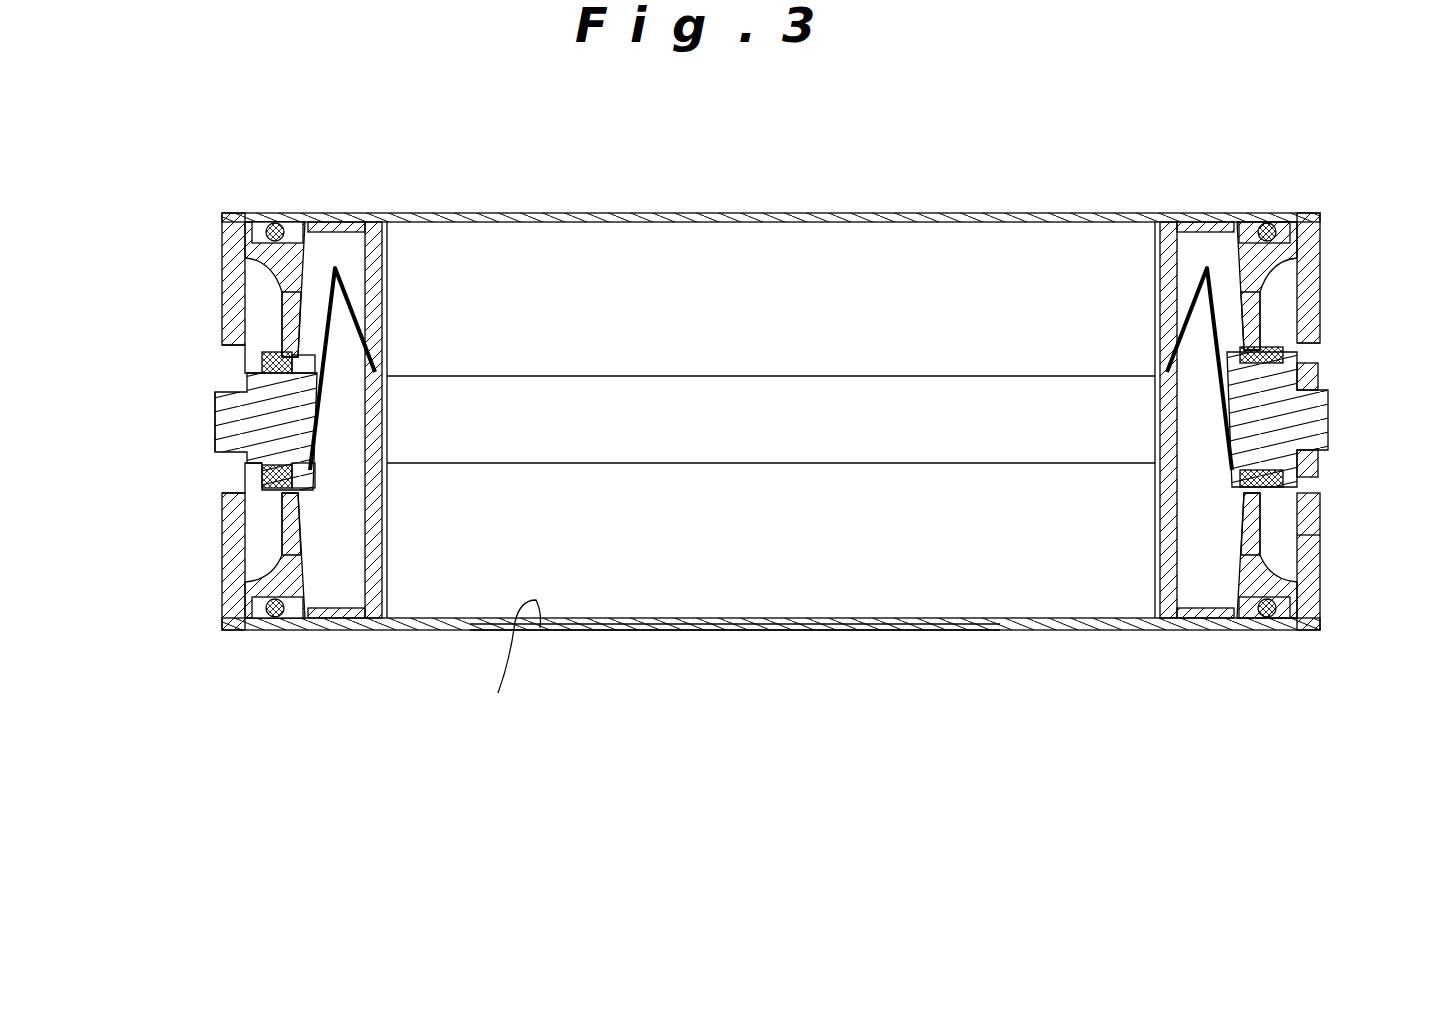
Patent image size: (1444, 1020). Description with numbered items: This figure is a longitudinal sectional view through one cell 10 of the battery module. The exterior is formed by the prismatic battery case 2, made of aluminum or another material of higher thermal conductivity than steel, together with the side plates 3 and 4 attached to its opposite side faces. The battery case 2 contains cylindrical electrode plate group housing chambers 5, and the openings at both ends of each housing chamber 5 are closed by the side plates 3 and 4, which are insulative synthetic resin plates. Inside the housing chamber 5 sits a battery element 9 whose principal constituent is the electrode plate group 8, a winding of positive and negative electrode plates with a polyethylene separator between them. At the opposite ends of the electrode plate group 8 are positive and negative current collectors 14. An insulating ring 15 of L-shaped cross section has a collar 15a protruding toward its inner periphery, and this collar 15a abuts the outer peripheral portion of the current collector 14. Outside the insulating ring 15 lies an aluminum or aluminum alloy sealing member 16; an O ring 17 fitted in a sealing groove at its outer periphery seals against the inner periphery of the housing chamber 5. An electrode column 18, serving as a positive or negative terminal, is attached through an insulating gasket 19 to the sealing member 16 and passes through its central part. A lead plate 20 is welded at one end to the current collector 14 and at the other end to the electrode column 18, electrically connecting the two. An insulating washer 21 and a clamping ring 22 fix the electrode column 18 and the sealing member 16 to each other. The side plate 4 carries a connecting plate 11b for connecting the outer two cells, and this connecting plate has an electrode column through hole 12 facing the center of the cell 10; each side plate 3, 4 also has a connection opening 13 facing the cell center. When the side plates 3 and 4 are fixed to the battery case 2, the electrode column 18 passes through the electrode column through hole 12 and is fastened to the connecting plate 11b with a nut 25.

The battery case 2 is at (590, 623).
The side plate 3 is at (235, 260).
The side plate 4 is at (1314, 575).
The electrode plate group housing chamber 5 is at (514, 673).
The electrode plate group 8 is at (728, 548).
The battery element 9 is at (727, 626).
The cell 10 is at (897, 632).
The connecting plate 11b is at (1313, 510).
The electrode column through hole 12 is at (1328, 440).
The connection opening 13 is at (222, 357).
The current collector 14 is at (400, 623).
The insulating ring 15 is at (345, 620).
The collar 15a is at (380, 220).
The sealing member 16 is at (262, 600).
The O ring 17 is at (288, 623).
The electrode column 18 is at (213, 433).
The insulating gasket 19 is at (287, 522).
The lead plate 20 is at (322, 286).
The insulating washer 21 is at (250, 413).
The clamping ring 22 is at (262, 362).
The nut 25 is at (1317, 380).